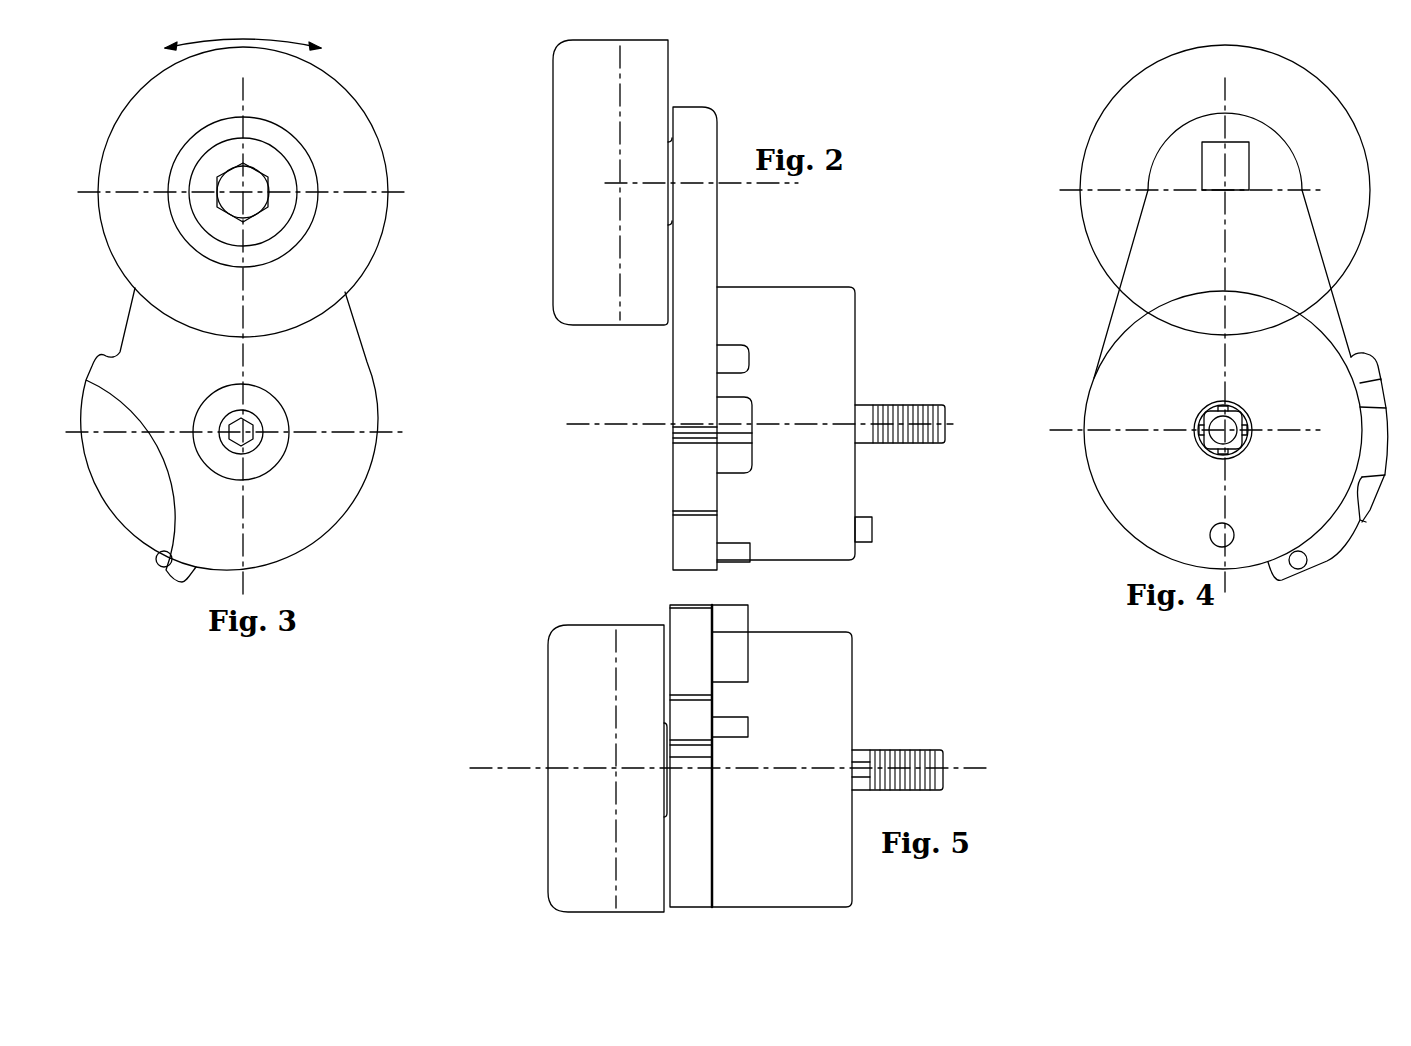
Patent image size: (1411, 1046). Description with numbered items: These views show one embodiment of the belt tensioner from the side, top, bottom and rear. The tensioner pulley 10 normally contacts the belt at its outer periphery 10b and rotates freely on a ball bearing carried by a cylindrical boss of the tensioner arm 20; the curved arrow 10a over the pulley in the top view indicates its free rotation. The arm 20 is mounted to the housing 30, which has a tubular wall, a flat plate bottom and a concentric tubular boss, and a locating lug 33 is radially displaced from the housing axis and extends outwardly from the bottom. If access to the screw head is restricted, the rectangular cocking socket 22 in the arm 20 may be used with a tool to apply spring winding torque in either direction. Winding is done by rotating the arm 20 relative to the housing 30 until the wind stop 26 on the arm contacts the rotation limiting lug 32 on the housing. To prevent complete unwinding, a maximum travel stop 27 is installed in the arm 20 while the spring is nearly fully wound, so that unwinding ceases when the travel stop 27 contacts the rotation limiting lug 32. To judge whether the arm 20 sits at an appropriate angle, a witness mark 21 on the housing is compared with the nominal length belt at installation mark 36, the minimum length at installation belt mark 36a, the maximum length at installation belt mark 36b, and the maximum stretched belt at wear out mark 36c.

In FIG. 3, the tensioner pulley 10 is at (243, 192).
In FIG. 2, the tensioner pulley 10 is at (668, 62).
In FIG. 5, the tensioner pulley 10 is at (561, 626).
In FIG. 3, the pulley rotation direction 10a is at (268, 56).
In FIG. 3, the outer periphery 10b is at (366, 113).
In FIG. 4, the outer periphery 10b is at (1106, 113).
In FIG. 3, the tensioner arm 20 is at (229, 435).
In FIG. 2, the tensioner arm 20 is at (717, 197).
In FIG. 5, the tensioner arm 20 is at (709, 756).
In FIG. 4, the tensioner arm 20 is at (1113, 300).
In FIG. 2, the witness mark 21 is at (753, 428).
In FIG. 4, the rectangular cocking socket 22 is at (1202, 168).
In FIG. 2, the wind stop 26 is at (737, 345).
In FIG. 4, the wind stop 26 is at (1388, 331).
In FIG. 2, the maximum travel stop 27 is at (752, 552).
In FIG. 5, the maximum travel stop 27 is at (748, 727).
In FIG. 4, the maximum travel stop 27 is at (1307, 560).
In FIG. 2, the housing 30 is at (832, 287).
In FIG. 5, the housing 30 is at (782, 769).
In FIG. 4, the housing 30 is at (1223, 435).
In FIG. 2, the rotation limiting lug 32 is at (753, 453).
In FIG. 4, the rotation limiting lug 32 is at (1362, 522).
In FIG. 2, the locating lug 33 is at (872, 528).
In FIG. 5, the locating lug 33 is at (872, 768).
In FIG. 4, the locating lug 33 is at (1222, 547).
In FIG. 2, the nominal length belt at installation mark 36 is at (673, 434).
In FIG. 2, the minimum length at installation belt mark 36a is at (673, 426).
In FIG. 2, the maximum length at installation belt mark 36b is at (673, 441).
In FIG. 2, the maximum stretched belt at wear out mark 36c is at (673, 513).